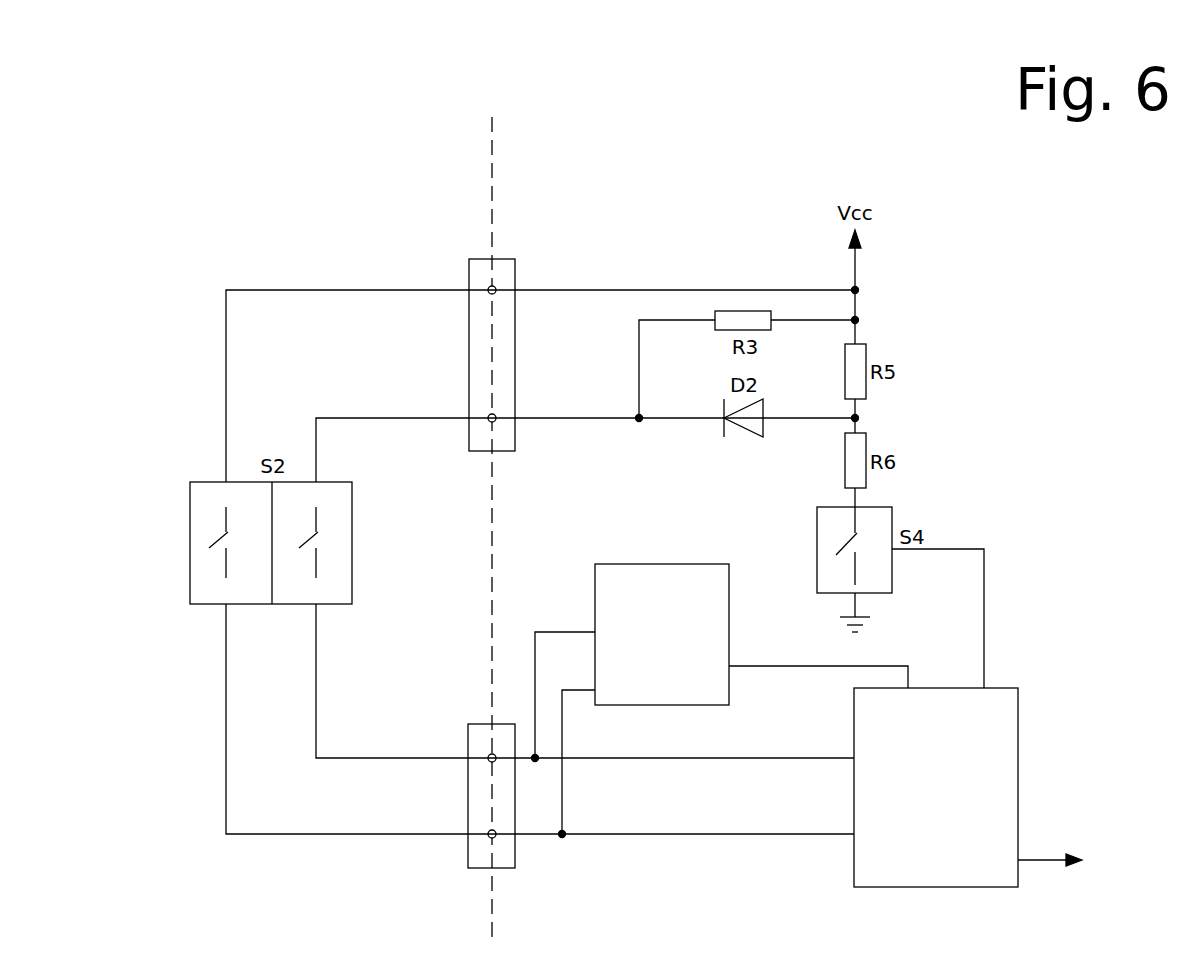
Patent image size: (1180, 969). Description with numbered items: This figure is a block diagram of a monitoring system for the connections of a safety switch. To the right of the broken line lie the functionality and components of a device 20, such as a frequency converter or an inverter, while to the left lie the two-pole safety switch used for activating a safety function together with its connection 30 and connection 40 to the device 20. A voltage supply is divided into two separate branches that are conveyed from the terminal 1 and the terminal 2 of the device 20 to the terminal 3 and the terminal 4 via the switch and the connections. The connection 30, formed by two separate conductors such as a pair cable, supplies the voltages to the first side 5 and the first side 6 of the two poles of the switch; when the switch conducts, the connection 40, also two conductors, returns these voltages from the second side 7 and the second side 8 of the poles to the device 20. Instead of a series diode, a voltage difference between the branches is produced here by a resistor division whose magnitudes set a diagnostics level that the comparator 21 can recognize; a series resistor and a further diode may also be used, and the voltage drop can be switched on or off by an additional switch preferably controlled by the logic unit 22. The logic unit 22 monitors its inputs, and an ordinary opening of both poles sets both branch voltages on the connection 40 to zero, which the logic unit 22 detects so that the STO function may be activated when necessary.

The device 20 is at (501, 530).
The connection 30 is at (368, 371).
The connection 40 is at (363, 808).
The comparator 21 is at (729, 583).
The logic unit 22 is at (1018, 718).
The terminal 1 is at (486, 278).
The terminal 2 is at (486, 404).
The terminal 3 is at (486, 822).
The terminal 4 is at (486, 746).
The first side of switch pole 5 is at (228, 496).
The first side of switch pole 6 is at (316, 496).
The second side of switch pole 7 is at (228, 593).
The second side of switch pole 8 is at (316, 593).